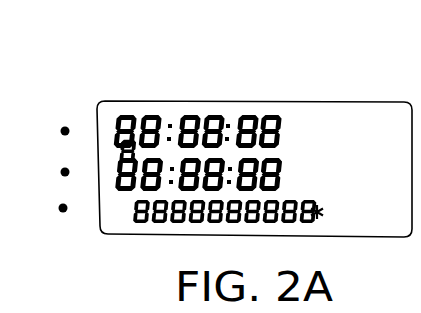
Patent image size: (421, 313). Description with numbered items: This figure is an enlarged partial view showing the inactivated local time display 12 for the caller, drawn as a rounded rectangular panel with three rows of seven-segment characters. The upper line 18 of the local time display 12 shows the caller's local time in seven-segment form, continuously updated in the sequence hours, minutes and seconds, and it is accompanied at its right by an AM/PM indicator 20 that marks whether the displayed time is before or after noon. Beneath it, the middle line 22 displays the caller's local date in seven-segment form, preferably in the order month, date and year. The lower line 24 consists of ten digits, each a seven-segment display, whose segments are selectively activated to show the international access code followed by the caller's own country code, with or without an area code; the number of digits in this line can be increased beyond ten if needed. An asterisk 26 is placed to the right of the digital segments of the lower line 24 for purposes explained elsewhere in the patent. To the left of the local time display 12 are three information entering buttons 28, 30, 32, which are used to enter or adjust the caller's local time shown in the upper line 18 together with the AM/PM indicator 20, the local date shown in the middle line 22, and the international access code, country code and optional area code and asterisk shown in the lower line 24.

The local time display 12 is at (258, 87).
The upper line 18 is at (114, 126).
The AM/PM indicator 20 is at (333, 132).
The middle line 22 is at (282, 173).
The lower line 24 is at (168, 223).
The asterisk 26 is at (325, 212).
The information entering button 28 is at (63, 127).
The information entering button 30 is at (63, 168).
The information entering button 32 is at (61, 203).